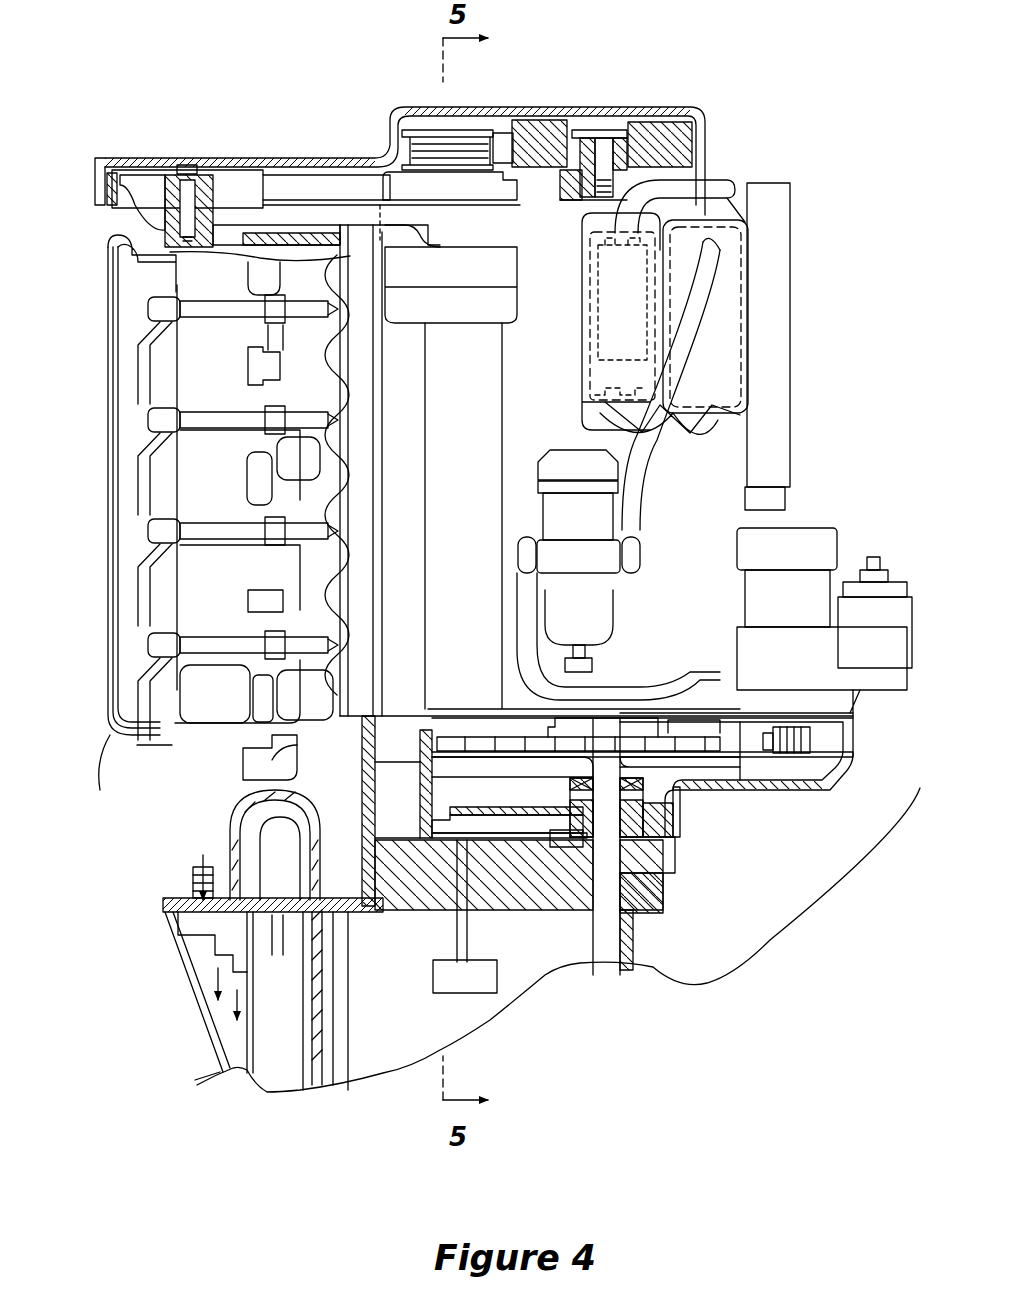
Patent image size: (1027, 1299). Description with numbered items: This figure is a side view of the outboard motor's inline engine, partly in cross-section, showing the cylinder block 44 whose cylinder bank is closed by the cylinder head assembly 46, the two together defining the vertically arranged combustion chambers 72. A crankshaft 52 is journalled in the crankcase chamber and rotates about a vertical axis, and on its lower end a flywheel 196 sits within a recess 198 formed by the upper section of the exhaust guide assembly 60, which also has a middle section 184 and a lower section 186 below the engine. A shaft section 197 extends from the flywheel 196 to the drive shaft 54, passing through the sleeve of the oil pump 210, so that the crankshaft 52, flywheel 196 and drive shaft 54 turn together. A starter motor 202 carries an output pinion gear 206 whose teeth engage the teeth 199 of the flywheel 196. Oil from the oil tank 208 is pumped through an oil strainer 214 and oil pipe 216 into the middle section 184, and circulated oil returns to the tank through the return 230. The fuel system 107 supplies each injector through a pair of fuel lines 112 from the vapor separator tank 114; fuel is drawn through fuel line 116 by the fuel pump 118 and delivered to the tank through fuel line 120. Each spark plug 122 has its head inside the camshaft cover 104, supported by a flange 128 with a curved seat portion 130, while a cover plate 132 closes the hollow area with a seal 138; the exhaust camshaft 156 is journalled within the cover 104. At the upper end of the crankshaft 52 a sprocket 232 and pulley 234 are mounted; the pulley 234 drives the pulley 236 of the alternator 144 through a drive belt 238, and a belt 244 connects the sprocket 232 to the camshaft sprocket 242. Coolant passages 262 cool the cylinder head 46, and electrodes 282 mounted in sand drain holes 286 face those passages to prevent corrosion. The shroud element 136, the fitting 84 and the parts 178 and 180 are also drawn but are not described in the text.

The cylinder block 44 is at (490, 418).
The cylinder head assembly 46 is at (380, 462).
The crankshaft 52 is at (640, 728).
The drive shaft 54 is at (600, 945).
The exhaust guide assembly 60 is at (810, 865).
The combustion chambers 72 is at (355, 375).
The cover 84 is at (645, 112).
The camshaft cover 104 is at (233, 765).
The fuel system 107 is at (668, 575).
The fuel lines 112 is at (620, 240).
The vapor separator tank 114 is at (770, 250).
The fuel line 116 is at (520, 625).
The fuel pump 118 is at (160, 265).
The fuel line 120 is at (700, 320).
The spark plug 122 is at (210, 320).
The flange 128 is at (195, 440).
The curved seat portion 130 is at (192, 560).
The cover plate 132 is at (135, 760).
The shroud 136 is at (105, 230).
The seal 138 is at (150, 490).
The alternator 144 is at (380, 178).
The exhaust camshaft 156 is at (200, 205).
The exhaust passage 178 is at (225, 812).
The muffler 180 is at (260, 1080).
The middle section 184 is at (358, 808).
The lower section 186 is at (680, 893).
The flywheel 196 is at (700, 752).
The shaft section 197 is at (683, 795).
The recess 198 is at (397, 755).
The teeth 199 is at (800, 760).
The starter motor 202 is at (893, 565).
The output pinion gear 206 is at (815, 740).
The oil tank 208 is at (520, 980).
The oil pump 210 is at (560, 880).
The oil strainer 214 is at (455, 985).
The oil pipe 216 is at (470, 940).
The return 230 is at (397, 855).
The sprocket 232 is at (665, 135).
The pulley 234 is at (565, 130).
The pulley 236 is at (420, 132).
The drive belt 238 is at (505, 135).
The camshaft sprocket 242 is at (148, 185).
The belt 244 is at (295, 178).
The coolant passages 262 is at (255, 482).
The electrodes 282 is at (255, 368).
The sand drain holes 286 is at (380, 400).